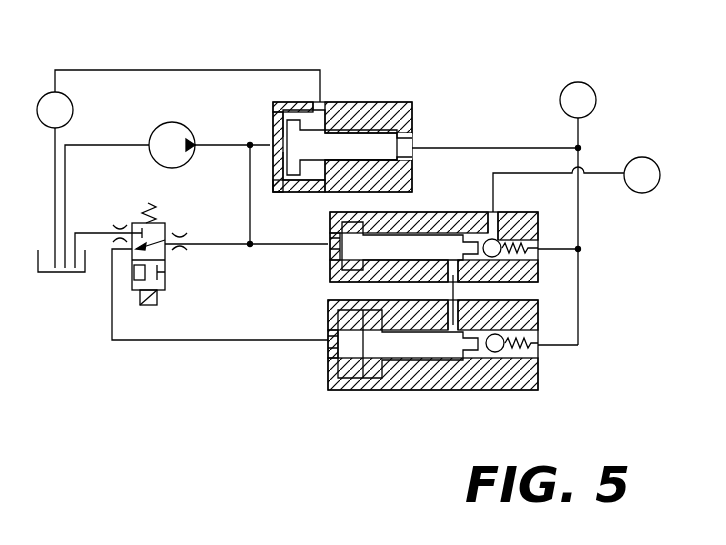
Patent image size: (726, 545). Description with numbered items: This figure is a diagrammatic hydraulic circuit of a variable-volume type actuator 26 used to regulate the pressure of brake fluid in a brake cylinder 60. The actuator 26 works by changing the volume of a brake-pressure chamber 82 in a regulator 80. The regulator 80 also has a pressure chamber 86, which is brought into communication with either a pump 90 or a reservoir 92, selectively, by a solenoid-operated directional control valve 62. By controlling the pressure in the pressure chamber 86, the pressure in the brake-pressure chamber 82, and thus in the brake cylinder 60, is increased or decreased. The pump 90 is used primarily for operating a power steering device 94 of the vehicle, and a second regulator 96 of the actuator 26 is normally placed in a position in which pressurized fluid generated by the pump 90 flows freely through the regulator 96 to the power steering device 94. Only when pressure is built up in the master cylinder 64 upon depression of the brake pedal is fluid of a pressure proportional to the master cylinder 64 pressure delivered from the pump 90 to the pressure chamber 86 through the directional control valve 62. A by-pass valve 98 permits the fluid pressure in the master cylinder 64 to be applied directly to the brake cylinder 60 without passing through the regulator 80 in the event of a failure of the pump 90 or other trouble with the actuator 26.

The actuator 26 is at (478, 84).
The brake cylinder 60 is at (640, 164).
The solenoid-operated directional control valve 62 is at (167, 266).
The master cylinder 64 is at (575, 93).
The regulator 80 is at (433, 367).
The brake-pressure chamber 82 is at (465, 360).
The pressure chamber 86 is at (350, 366).
The pump 90 is at (173, 134).
The reservoir 92 is at (60, 273).
The power steering device 94 is at (62, 109).
The regulator 96 is at (370, 110).
The by-pass valve 98 is at (350, 276).